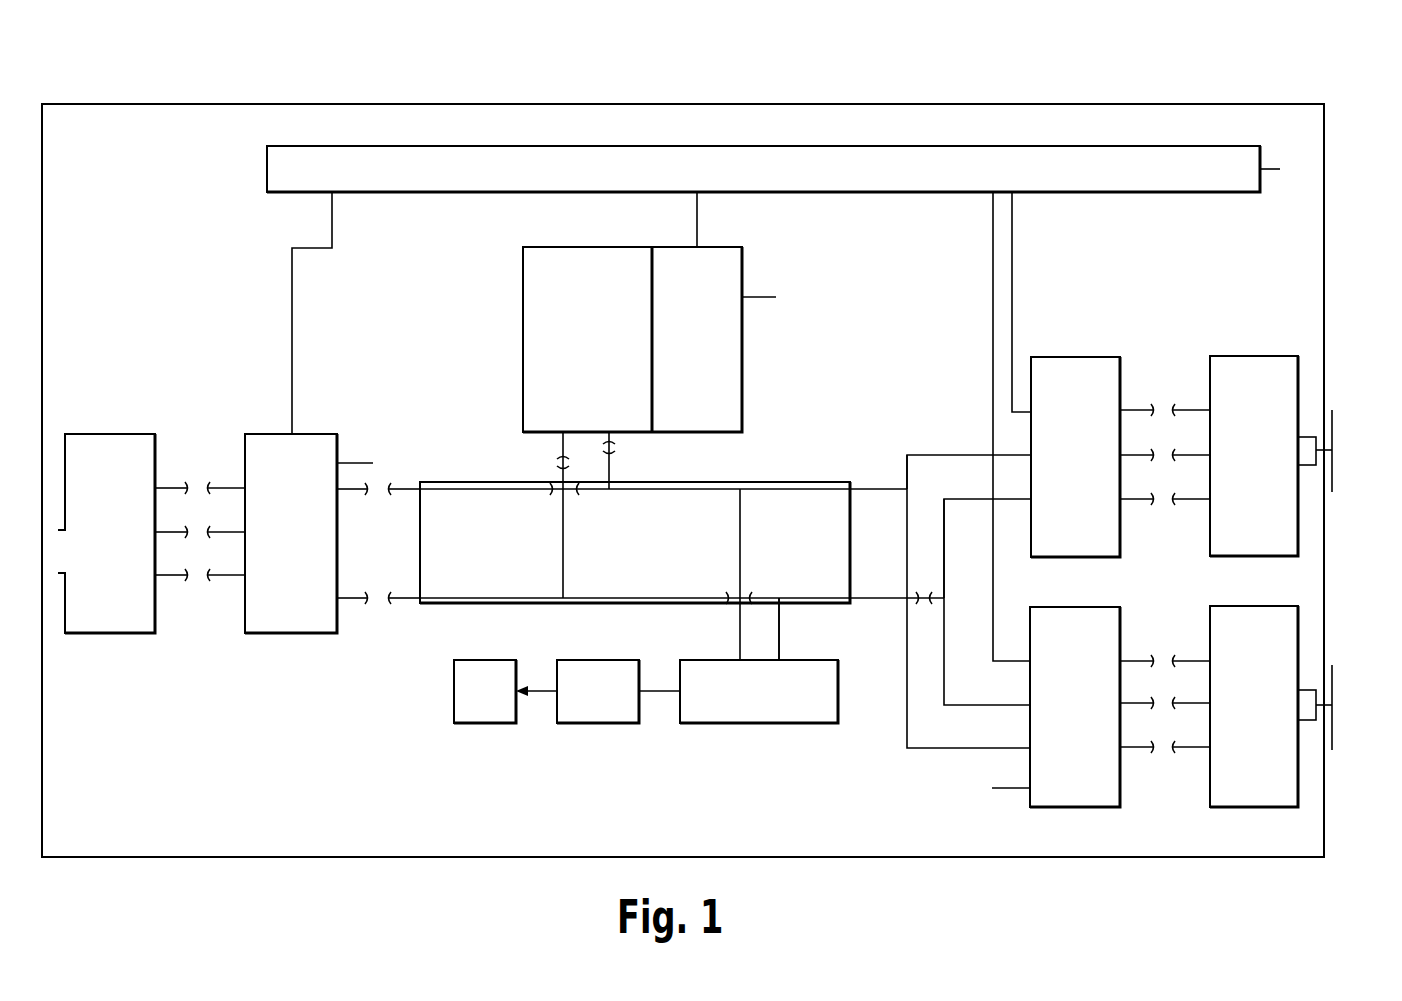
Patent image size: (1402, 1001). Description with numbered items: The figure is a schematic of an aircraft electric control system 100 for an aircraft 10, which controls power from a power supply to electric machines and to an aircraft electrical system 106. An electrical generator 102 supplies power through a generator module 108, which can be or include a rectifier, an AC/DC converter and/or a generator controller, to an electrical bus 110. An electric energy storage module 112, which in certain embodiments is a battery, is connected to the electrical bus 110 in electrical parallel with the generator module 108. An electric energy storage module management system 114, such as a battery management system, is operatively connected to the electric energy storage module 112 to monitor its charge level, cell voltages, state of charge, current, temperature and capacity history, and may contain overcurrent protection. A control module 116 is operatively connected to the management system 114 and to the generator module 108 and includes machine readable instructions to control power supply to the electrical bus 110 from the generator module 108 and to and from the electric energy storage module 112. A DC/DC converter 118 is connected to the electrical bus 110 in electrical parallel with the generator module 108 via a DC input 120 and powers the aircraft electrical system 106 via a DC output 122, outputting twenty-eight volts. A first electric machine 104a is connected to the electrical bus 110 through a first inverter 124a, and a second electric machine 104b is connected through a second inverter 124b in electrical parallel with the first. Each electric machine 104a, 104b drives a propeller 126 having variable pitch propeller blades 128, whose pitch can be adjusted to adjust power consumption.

The aircraft electric control system 100 is at (118, 46).
The aircraft 10 is at (218, 104).
The electrical generator 102 is at (137, 633).
The first electric machine 104a is at (1258, 356).
The second electric machine 104b is at (1253, 807).
The aircraft electrical system 106 is at (477, 723).
The generator module 108 is at (320, 633).
The electrical bus 110 is at (721, 482).
The electric energy storage module 112 is at (523, 330).
The electric energy storage module management system 114 is at (742, 395).
The control module 116 is at (472, 192).
The DC/DC converter 118 is at (722, 723).
The DC input 120 is at (783, 660).
The DC output 122 is at (680, 686).
The first inverter 124a is at (1078, 357).
The second inverter 124b is at (1065, 807).
The propeller 126 is at (1344, 447).
The variable pitch propeller blades 128 is at (1332, 492).